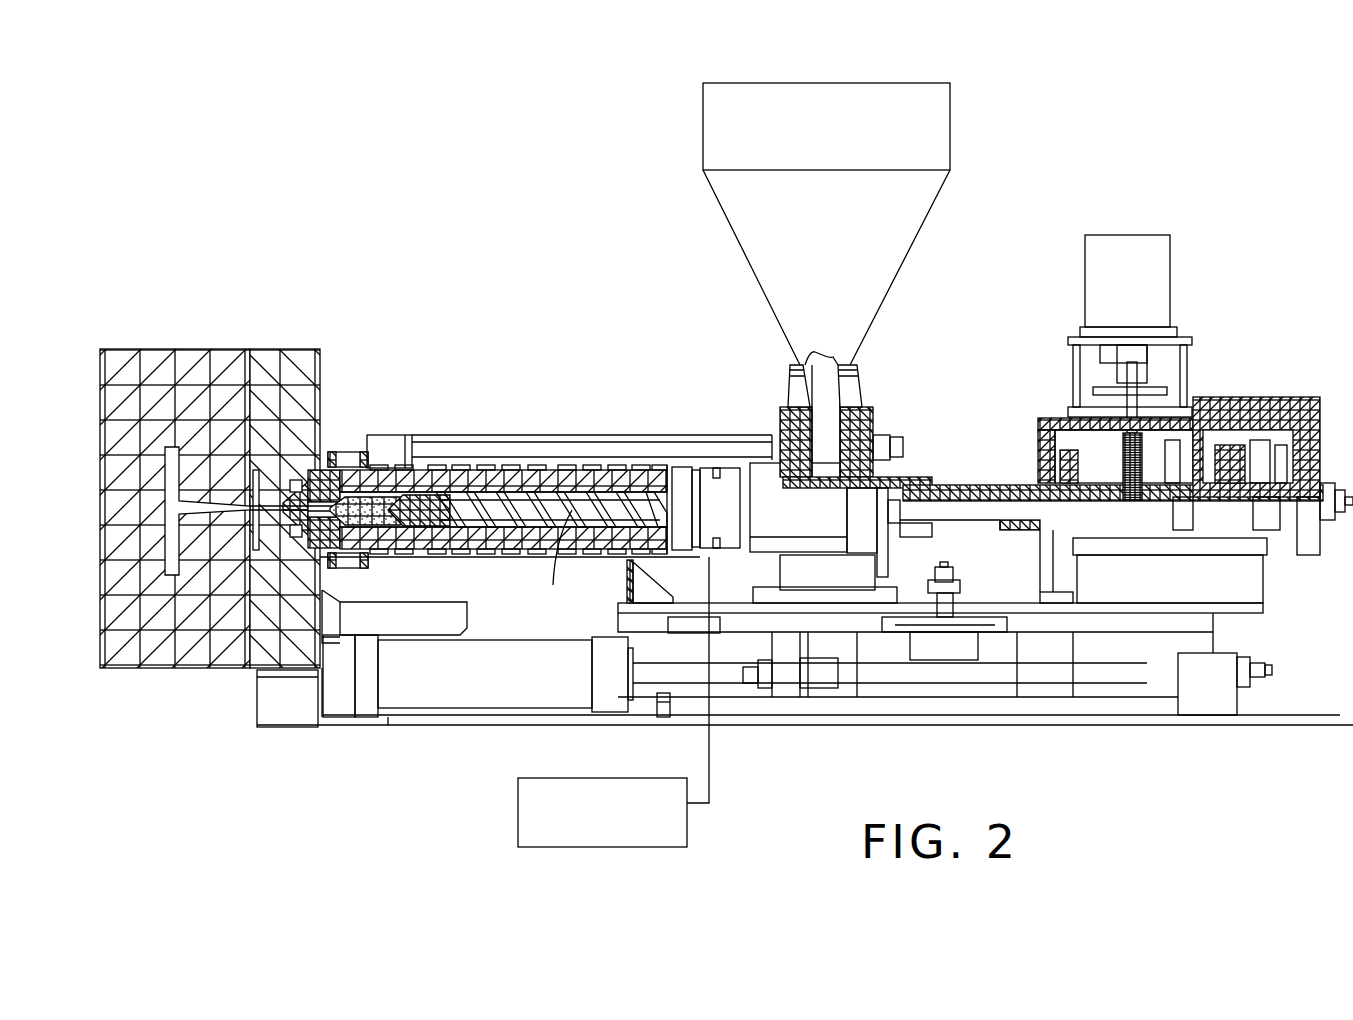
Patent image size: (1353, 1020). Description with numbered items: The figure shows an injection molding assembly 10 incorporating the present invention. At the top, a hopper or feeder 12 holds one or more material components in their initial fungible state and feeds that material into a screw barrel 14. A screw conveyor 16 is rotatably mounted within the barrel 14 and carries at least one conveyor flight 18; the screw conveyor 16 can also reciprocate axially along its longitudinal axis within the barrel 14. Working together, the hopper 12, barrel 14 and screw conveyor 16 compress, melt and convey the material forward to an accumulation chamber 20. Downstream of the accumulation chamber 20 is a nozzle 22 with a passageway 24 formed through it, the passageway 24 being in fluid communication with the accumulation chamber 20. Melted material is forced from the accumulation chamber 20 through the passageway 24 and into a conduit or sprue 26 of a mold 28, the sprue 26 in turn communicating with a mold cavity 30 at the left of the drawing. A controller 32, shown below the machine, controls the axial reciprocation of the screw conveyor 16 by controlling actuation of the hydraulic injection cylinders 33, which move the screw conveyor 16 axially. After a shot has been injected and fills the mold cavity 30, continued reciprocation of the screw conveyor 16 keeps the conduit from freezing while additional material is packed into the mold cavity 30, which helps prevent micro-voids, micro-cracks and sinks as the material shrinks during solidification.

The injection molding assembly 10 is at (1145, 88).
The hopper 12 is at (903, 222).
The screw barrel 14 is at (518, 478).
The screw conveyor 16 is at (610, 507).
The conveyor flight 18 is at (559, 560).
The accumulation chamber 20 is at (385, 503).
The nozzle 22 is at (270, 535).
The passageway 24 is at (283, 497).
The sprue 26 is at (205, 508).
The mold 28 is at (153, 347).
The mold cavity 30 is at (172, 568).
The controller 32 is at (680, 835).
The hydraulic injection cylinders 33 is at (767, 508).